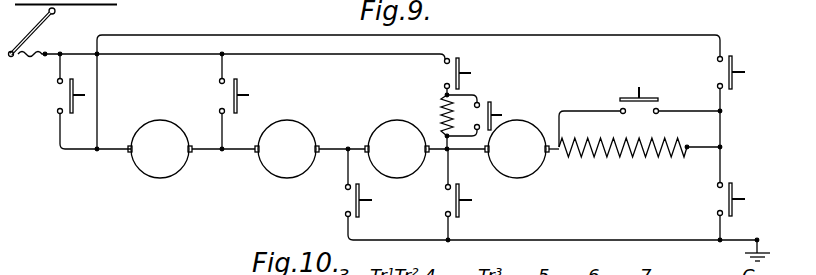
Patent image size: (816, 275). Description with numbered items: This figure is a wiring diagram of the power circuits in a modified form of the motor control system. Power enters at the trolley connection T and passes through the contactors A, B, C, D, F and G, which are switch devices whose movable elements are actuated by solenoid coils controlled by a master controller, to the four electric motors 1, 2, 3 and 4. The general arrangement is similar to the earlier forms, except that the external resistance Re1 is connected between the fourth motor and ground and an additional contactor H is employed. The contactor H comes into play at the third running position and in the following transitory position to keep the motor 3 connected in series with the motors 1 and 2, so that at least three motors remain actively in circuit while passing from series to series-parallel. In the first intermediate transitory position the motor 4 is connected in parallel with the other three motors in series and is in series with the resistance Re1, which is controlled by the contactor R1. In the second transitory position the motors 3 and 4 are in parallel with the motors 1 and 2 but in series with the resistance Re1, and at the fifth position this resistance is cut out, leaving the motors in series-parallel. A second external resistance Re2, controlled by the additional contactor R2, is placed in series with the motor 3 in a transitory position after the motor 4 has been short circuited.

The trolley connection T is at (63, 31).
The contactor A is at (57, 97).
The contactor B is at (224, 101).
The contactor C is at (445, 72).
The contactor D is at (717, 72).
The contactor F is at (340, 201).
The contactor G is at (716, 199).
The additional contactor H is at (443, 201).
The contactor R1 is at (639, 117).
The additional contactor R2 is at (480, 117).
The external resistance Re1 is at (639, 161).
The external resistance Re2 is at (441, 110).
The electric motor 1 is at (160, 149).
The electric motor 2 is at (287, 149).
The electric motor 3 is at (397, 149).
The electric motor 4 is at (517, 149).